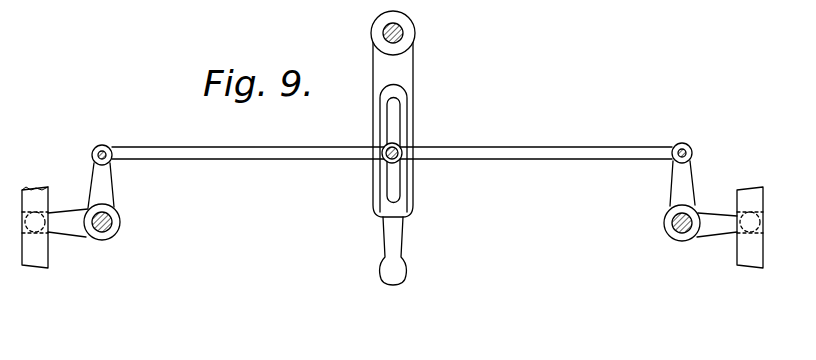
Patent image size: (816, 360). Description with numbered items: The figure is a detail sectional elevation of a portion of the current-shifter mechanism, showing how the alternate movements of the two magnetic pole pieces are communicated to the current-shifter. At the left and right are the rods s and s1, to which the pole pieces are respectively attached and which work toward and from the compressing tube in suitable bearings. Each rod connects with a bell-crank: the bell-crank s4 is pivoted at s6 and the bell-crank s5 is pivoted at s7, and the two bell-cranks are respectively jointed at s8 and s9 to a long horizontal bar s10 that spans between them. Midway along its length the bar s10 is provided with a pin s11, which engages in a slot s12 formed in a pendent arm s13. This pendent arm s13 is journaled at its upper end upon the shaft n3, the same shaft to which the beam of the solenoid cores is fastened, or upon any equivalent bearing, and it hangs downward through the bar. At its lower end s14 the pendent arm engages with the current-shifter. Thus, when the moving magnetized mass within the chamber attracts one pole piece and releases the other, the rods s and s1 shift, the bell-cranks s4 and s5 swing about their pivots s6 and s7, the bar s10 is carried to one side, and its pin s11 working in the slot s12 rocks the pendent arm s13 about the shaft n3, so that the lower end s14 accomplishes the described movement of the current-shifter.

The rod s is at (34, 217).
The rod s1 is at (752, 208).
The bell-crank s4 is at (112, 201).
The bell-crank s5 is at (667, 188).
The pivot s6 is at (108, 238).
The pivot s7 is at (675, 228).
The joint s8 is at (94, 147).
The joint s9 is at (696, 143).
The bar s10 is at (287, 152).
The pin s11 is at (385, 151).
The slot s12 is at (393, 127).
The pendent arm s13 is at (383, 79).
The lower end of pendent arm s14 is at (404, 274).
The shaft n3 is at (401, 33).